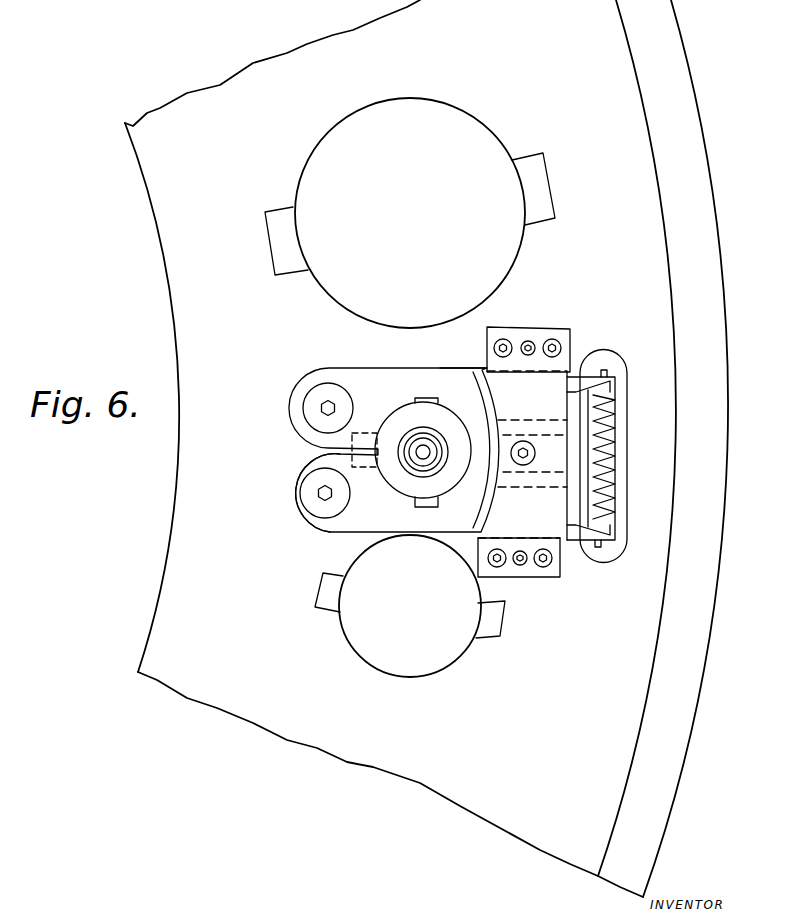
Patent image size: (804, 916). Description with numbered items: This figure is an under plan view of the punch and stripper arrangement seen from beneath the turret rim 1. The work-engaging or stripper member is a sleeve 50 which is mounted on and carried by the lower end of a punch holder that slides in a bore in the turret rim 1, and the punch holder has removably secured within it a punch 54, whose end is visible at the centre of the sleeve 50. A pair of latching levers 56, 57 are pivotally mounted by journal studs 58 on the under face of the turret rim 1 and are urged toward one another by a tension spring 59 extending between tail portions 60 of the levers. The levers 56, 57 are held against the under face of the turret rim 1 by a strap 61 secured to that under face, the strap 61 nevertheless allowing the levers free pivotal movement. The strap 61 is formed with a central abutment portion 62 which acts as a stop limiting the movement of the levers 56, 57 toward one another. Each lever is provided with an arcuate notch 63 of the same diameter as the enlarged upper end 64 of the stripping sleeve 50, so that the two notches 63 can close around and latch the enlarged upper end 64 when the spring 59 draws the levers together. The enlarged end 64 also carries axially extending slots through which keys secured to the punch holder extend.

The turret rim 1 is at (643, 642).
The sleeve 50 is at (410, 467).
The punch 54 is at (432, 455).
The latching lever 56 is at (373, 380).
The latching lever 57 is at (333, 527).
The journal studs 58 is at (321, 405).
The tension spring 59 is at (603, 403).
The tail portions 60 is at (610, 380).
The strap 61 is at (558, 575).
The central abutment portion 62 is at (555, 455).
The arcuate notches 63 is at (458, 407).
The enlarged upper end 64 is at (388, 440).